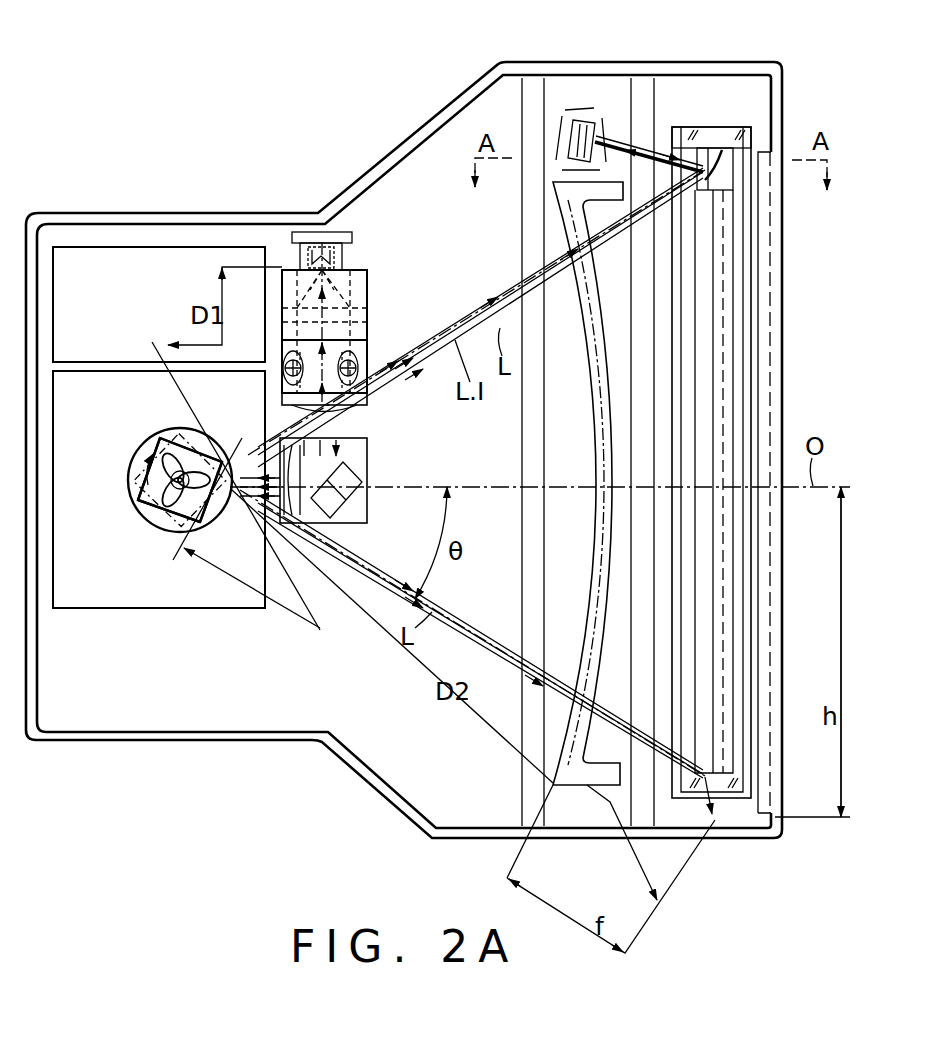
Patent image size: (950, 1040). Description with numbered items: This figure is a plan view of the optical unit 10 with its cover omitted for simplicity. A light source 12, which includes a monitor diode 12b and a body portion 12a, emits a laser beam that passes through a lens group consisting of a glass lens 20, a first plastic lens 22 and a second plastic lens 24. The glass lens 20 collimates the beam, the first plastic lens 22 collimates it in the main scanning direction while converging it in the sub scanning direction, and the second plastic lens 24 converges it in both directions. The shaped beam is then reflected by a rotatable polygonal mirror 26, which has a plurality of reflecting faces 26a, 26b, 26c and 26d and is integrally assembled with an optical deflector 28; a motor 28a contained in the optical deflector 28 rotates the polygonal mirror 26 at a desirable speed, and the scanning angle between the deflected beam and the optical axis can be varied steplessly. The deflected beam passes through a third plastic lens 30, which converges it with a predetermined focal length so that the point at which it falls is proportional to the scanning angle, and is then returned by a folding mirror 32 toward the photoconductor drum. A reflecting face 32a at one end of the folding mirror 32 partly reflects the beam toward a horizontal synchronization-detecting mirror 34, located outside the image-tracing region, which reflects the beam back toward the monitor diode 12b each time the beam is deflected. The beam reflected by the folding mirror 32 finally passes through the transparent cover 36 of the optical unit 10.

The optical unit 10 is at (318, 756).
The light source 12 is at (369, 236).
The laser body 12a is at (345, 262).
The monitor diode 12b is at (352, 234).
The glass lens 20 is at (362, 303).
The first plastic lens 22 is at (332, 407).
The second plastic lens 24 is at (330, 520).
The polygonal mirror 26 is at (191, 486).
The reflecting face 26a is at (222, 455).
The reflecting face 26b is at (145, 448).
The reflecting face 26c is at (150, 512).
The reflecting face 26d is at (245, 520).
The optical deflector 28 is at (146, 432).
The motor 28a is at (252, 585).
The third plastic lens 30 is at (575, 778).
The folding mirror 32 is at (758, 442).
The reflecting face 32a is at (712, 190).
The horizontal synchronization-detecting mirror 34 is at (600, 115).
The cover 36 is at (710, 128).